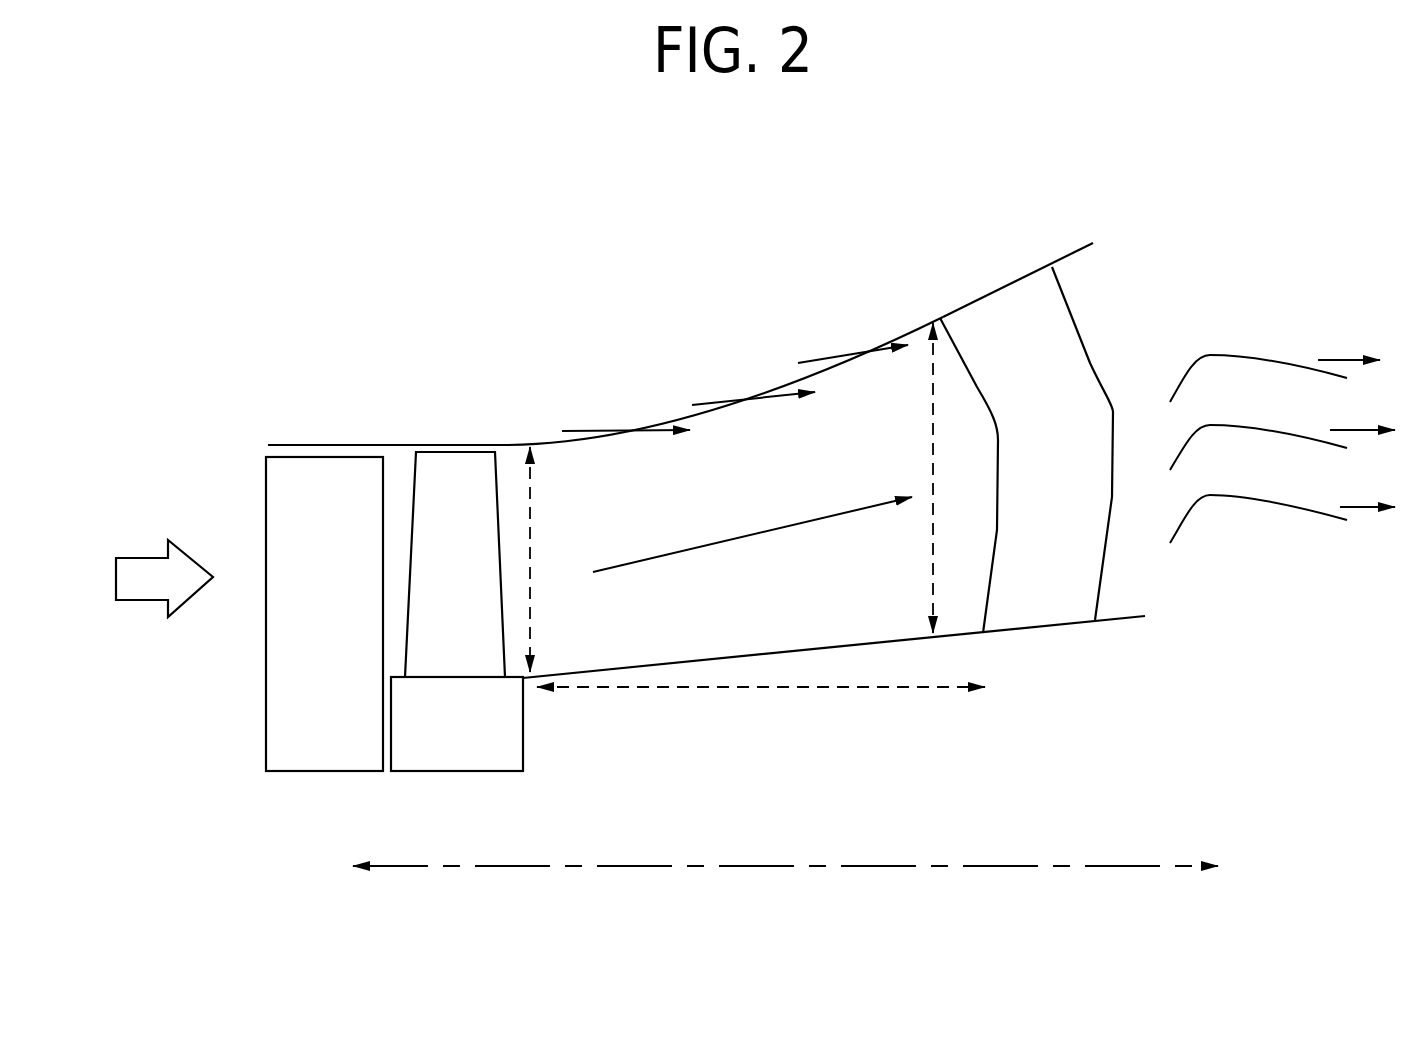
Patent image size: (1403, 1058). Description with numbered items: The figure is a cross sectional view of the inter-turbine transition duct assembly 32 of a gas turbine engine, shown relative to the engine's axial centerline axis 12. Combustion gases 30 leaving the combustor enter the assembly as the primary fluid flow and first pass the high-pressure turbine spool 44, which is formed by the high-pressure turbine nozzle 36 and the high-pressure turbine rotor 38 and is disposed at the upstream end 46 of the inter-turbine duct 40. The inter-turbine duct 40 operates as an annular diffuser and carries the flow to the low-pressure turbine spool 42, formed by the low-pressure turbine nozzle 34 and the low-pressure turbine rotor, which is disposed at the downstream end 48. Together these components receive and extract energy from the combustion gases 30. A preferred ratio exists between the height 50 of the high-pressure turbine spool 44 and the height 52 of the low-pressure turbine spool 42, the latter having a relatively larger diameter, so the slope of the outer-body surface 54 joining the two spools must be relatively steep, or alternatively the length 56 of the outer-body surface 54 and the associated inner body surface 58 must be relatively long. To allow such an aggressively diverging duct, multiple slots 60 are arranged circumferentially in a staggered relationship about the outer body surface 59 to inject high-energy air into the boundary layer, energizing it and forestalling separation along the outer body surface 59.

The axial centerline axis 12 is at (1100, 866).
The combustion gases 30 is at (140, 557).
The inter-turbine transition duct assembly 32 is at (363, 288).
The low-pressure turbine nozzle 34 is at (1105, 578).
The high-pressure turbine nozzle 36 is at (265, 611).
The high-pressure turbine rotor 38 is at (436, 573).
The inter-turbine duct 40 is at (698, 680).
The low-pressure turbine spool 42 is at (1204, 628).
The high-pressure turbine spool 44 is at (412, 794).
The upstream end 46 is at (545, 722).
The downstream end 48 is at (948, 712).
The height of the high-pressure turbine spool 50 is at (532, 558).
The height of the low-pressure turbine spool 52 is at (933, 402).
The outer-body surface 54 is at (882, 340).
The length of the outer-body surface 56 is at (777, 693).
The inner body surface 58 is at (735, 657).
The outer body surface 59 is at (575, 446).
The slots 60 is at (810, 363).